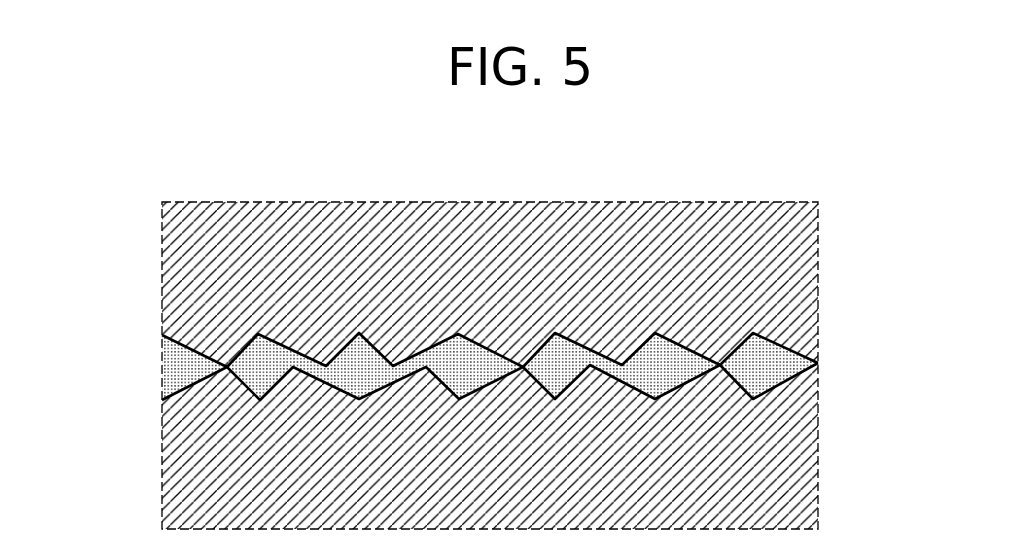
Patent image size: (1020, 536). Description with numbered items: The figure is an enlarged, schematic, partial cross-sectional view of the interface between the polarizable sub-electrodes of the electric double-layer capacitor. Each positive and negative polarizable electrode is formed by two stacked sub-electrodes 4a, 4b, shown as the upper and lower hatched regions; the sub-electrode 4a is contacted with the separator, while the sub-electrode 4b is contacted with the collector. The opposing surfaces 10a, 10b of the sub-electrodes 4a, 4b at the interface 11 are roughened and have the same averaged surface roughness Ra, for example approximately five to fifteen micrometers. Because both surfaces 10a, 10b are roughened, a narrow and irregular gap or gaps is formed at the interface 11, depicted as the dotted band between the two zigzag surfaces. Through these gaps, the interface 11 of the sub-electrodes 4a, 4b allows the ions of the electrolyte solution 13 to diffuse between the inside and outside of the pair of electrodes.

The sub-electrode 4a is at (803, 265).
The sub-electrode 4b is at (803, 462).
The opposing surface 10a is at (240, 347).
The opposing surface 10b is at (242, 385).
The interface 11 is at (268, 369).
The electrolyte solution 13 is at (772, 362).